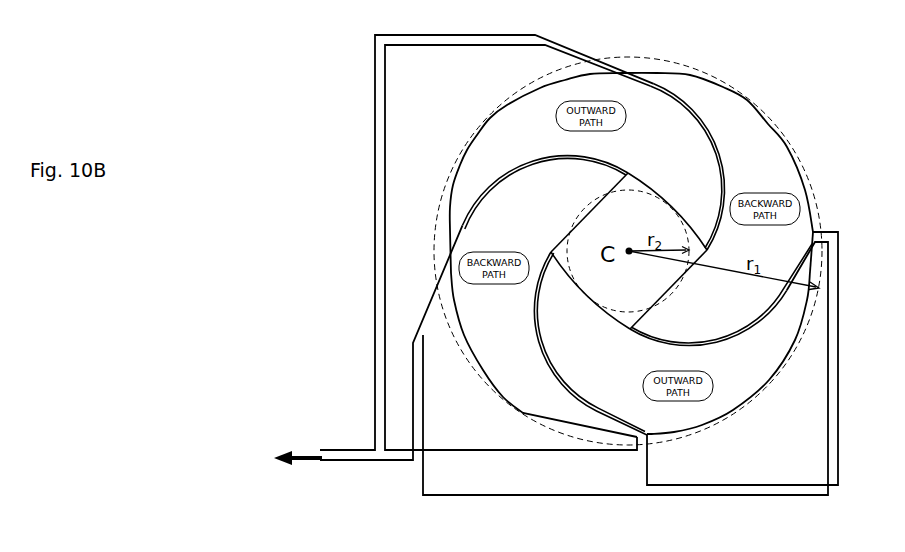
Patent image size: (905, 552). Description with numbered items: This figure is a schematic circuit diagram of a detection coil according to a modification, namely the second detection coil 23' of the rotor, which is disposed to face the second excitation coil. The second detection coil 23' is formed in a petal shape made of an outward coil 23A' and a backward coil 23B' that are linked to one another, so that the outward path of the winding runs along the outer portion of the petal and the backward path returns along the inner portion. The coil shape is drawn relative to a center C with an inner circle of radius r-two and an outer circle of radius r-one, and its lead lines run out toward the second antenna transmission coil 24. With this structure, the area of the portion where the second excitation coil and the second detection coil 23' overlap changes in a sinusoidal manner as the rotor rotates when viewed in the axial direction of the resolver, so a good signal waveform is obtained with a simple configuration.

The second detection coil 23' is at (563, 265).
The outward coil 23A' is at (615, 274).
The backward coil 23B' is at (639, 271).
The second antenna transmission coil 24 is at (254, 432).